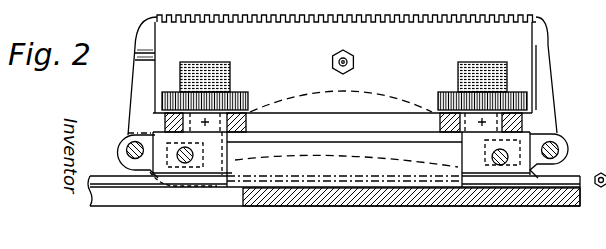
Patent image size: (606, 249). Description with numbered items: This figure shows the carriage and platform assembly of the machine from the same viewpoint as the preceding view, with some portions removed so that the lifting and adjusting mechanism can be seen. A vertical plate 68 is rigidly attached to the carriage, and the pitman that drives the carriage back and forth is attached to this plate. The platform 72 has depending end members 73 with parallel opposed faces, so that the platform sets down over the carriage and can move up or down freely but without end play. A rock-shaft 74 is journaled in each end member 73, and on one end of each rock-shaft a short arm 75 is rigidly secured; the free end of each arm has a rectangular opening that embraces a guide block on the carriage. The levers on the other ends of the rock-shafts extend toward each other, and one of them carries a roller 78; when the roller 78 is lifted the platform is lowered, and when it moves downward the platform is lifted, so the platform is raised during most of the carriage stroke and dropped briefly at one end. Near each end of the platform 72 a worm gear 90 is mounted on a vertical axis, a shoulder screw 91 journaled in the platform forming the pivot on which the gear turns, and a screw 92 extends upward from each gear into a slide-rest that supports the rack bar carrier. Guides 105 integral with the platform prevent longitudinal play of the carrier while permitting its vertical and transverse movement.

The vertical plate 68 is at (512, 40).
The platform 72 is at (353, 118).
The depending end member 73 is at (125, 142).
The rock-shaft 74 is at (124, 151).
The short arm 75 is at (341, 159).
The roller 78 is at (575, 188).
The worm gear 90 is at (250, 108).
The shoulder screw 91 is at (341, 98).
The screw 92 is at (203, 62).
The guide 105 is at (145, 45).